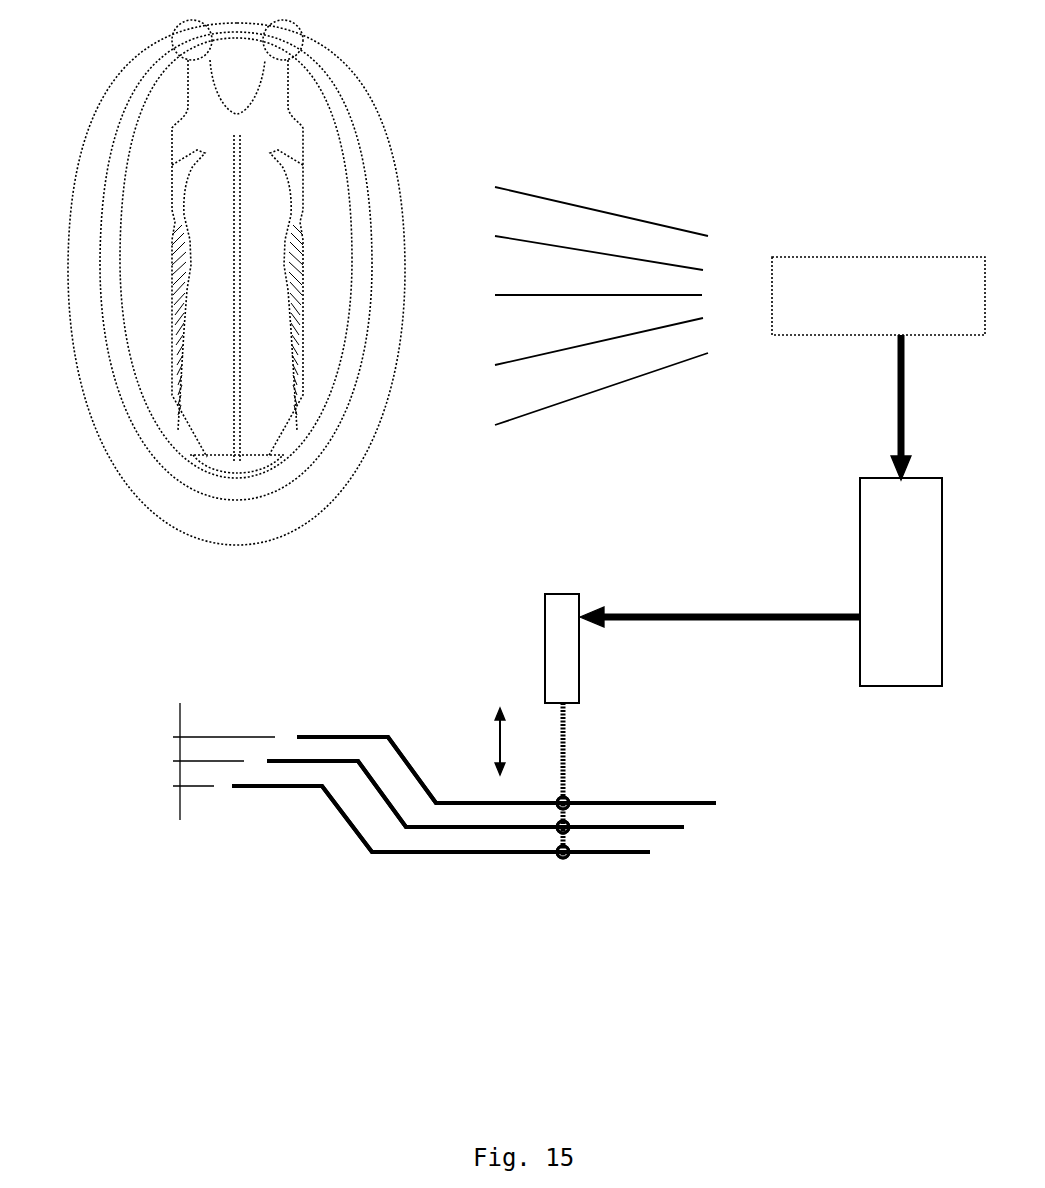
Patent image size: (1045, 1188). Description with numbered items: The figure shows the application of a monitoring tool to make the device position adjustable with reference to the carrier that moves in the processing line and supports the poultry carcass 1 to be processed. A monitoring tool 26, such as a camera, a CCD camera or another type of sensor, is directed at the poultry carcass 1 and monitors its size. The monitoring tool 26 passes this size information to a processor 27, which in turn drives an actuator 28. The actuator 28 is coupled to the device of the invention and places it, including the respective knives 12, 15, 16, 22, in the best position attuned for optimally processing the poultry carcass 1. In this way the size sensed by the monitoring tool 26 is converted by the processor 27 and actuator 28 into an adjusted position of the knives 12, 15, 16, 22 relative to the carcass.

The poultry carcass 1 is at (405, 188).
The monitoring tool 26 is at (909, 247).
The processor 27 is at (857, 548).
The actuator 28 is at (558, 588).
The knife 12 is at (574, 828).
The knife 15 is at (506, 773).
The knife 16 is at (475, 797).
The knife 22 is at (441, 822).